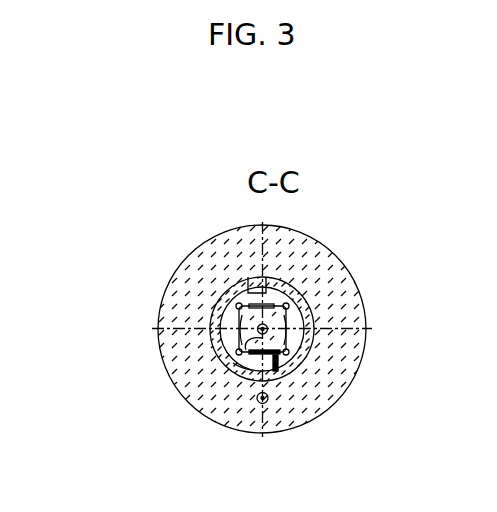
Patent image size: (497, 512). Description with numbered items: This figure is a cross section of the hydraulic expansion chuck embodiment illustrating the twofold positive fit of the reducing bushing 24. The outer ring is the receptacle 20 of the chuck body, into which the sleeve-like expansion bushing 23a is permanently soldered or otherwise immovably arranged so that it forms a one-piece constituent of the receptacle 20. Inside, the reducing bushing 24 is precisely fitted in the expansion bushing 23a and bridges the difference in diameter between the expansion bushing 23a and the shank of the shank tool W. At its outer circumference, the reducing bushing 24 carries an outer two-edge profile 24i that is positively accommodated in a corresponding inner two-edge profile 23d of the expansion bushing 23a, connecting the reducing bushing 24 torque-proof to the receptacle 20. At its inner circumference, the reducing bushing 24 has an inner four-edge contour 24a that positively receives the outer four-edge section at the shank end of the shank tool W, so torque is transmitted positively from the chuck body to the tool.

The receptacle 20 is at (325, 242).
The reducing bushing 24 is at (313, 318).
The outer two-edge profile 24i is at (255, 280).
The inner four-edge contour 24a is at (245, 368).
The expansion bushing 23a is at (288, 304).
The inner two-edge profile 23d is at (263, 293).
The shank tool W is at (238, 320).